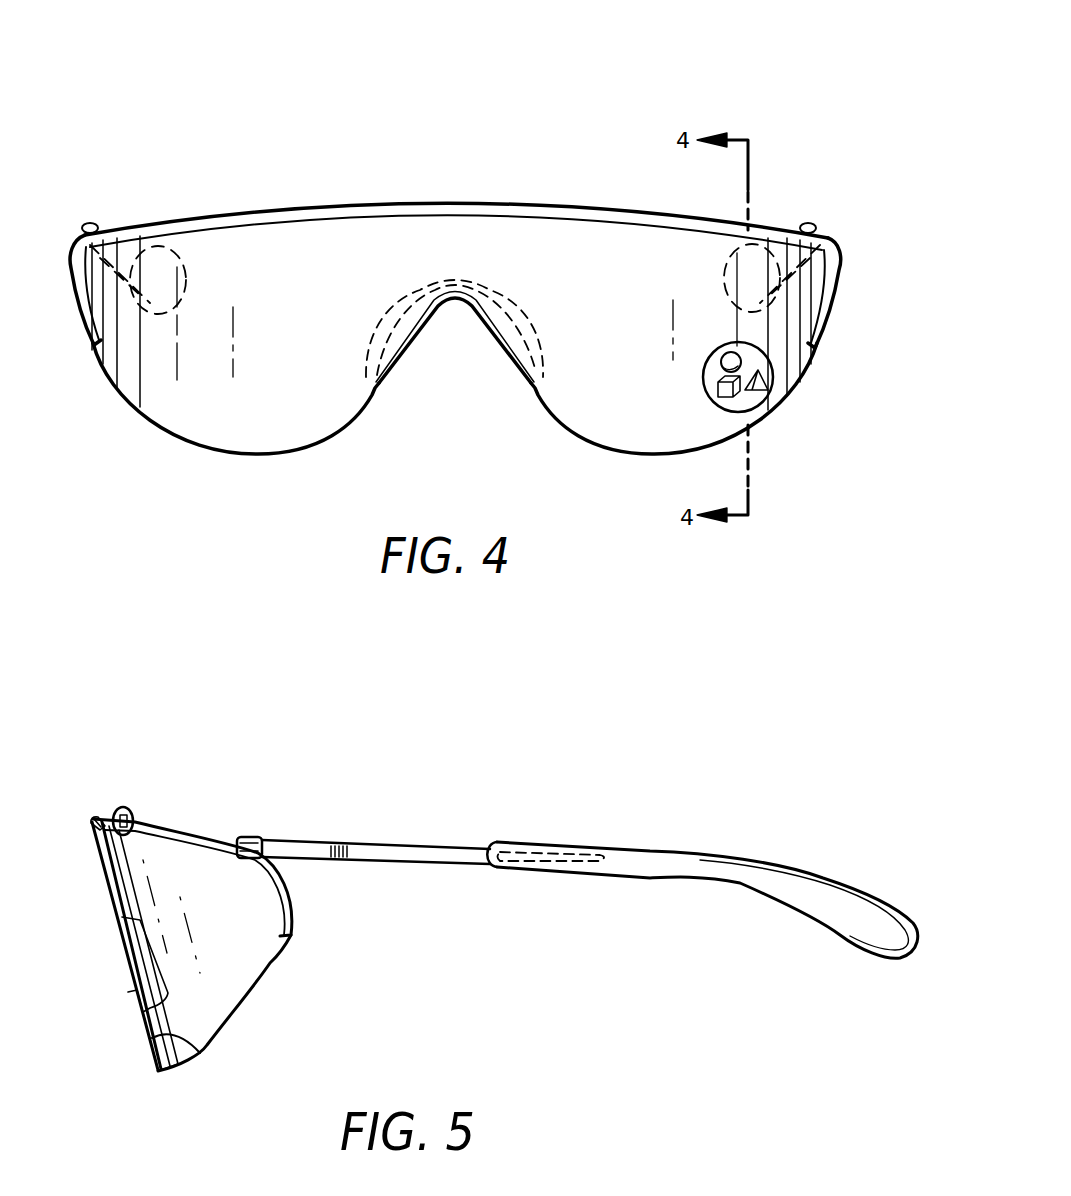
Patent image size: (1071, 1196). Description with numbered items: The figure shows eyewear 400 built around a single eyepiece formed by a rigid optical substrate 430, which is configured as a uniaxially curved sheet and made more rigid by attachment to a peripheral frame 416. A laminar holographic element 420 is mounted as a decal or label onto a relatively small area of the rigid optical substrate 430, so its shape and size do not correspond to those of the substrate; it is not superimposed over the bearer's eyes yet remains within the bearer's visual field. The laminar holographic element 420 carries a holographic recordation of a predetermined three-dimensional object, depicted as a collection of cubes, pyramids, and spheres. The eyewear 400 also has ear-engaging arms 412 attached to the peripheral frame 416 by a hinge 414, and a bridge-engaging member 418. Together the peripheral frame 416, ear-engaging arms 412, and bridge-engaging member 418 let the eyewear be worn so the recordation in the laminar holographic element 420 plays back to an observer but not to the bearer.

In FIG. 4, the eyewear 400 is at (638, 58).
In FIG. 4, the ear-engaging arms 412 is at (183, 249).
In FIG. 5, the ear-engaging arms 412 is at (431, 850).
In FIG. 5, the hinge 414 is at (254, 835).
In FIG. 4, the peripheral frame 416 is at (221, 216).
In FIG. 4, the bridge-engaging member 418 is at (402, 350).
In FIG. 4, the laminar holographic element 420 is at (704, 392).
In FIG. 5, the laminar holographic element 420 is at (152, 1037).
In FIG. 5, the rigid optical substrate 430 is at (200, 1053).